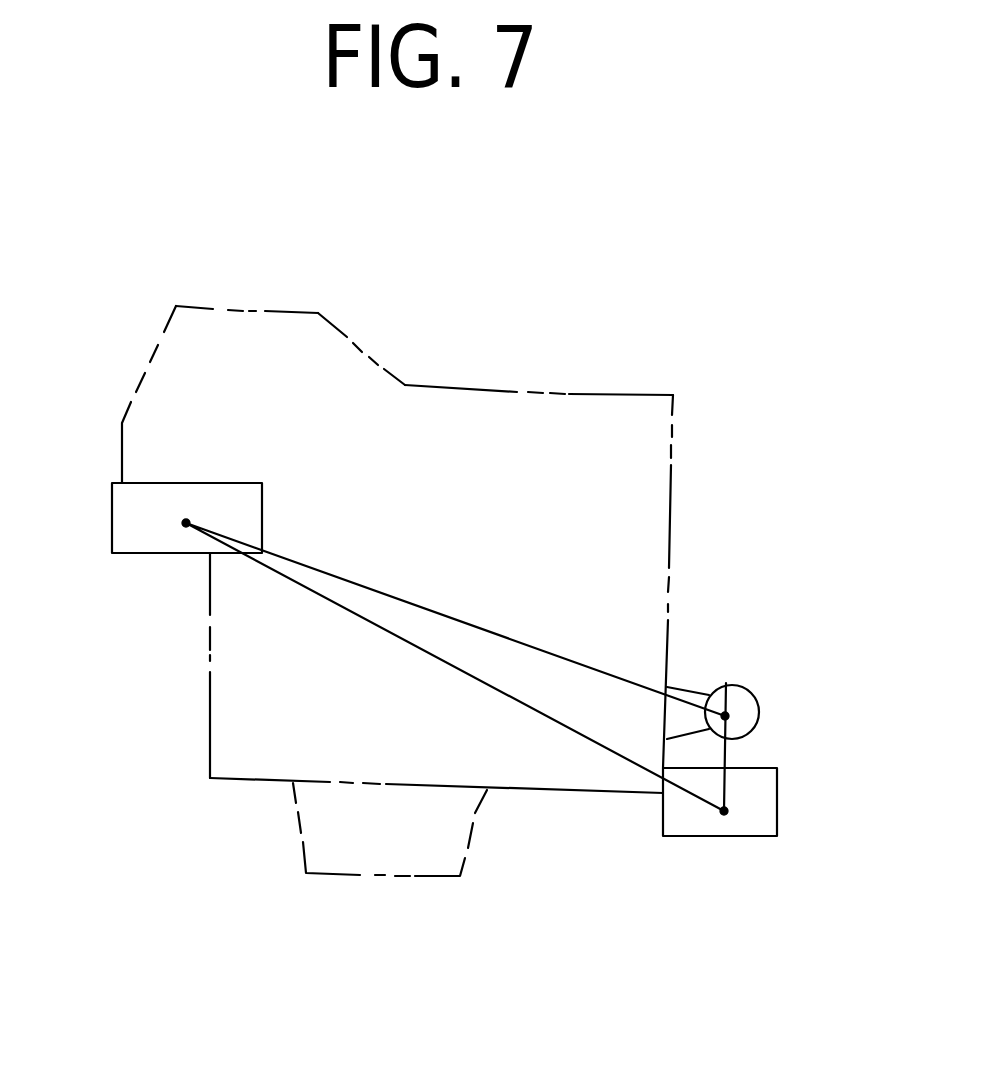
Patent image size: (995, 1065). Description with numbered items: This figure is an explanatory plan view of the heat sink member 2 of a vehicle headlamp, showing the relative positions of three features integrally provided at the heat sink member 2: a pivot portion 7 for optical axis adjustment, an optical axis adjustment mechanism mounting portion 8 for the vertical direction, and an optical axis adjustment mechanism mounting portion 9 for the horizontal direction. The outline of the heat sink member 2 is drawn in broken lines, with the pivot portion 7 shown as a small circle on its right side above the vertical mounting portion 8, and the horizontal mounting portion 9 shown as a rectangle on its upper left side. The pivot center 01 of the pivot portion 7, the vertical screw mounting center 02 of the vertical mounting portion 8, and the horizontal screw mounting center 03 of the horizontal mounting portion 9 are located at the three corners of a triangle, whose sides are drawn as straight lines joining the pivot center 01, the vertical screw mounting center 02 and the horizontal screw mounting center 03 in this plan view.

The heat sink member 2 is at (604, 395).
The pivot portion for optical axis adjustment 7 is at (726, 683).
The optical axis adjustment mechanism mounting portion for vertical direction 8 is at (777, 808).
The optical axis adjustment mechanism mounting portion for horizontal direction 9 is at (112, 529).
The center of the pivot portion 01 is at (725, 716).
The center of the vertical mounting portion 02 is at (724, 811).
The center of the horizontal mount portion 03 is at (186, 523).